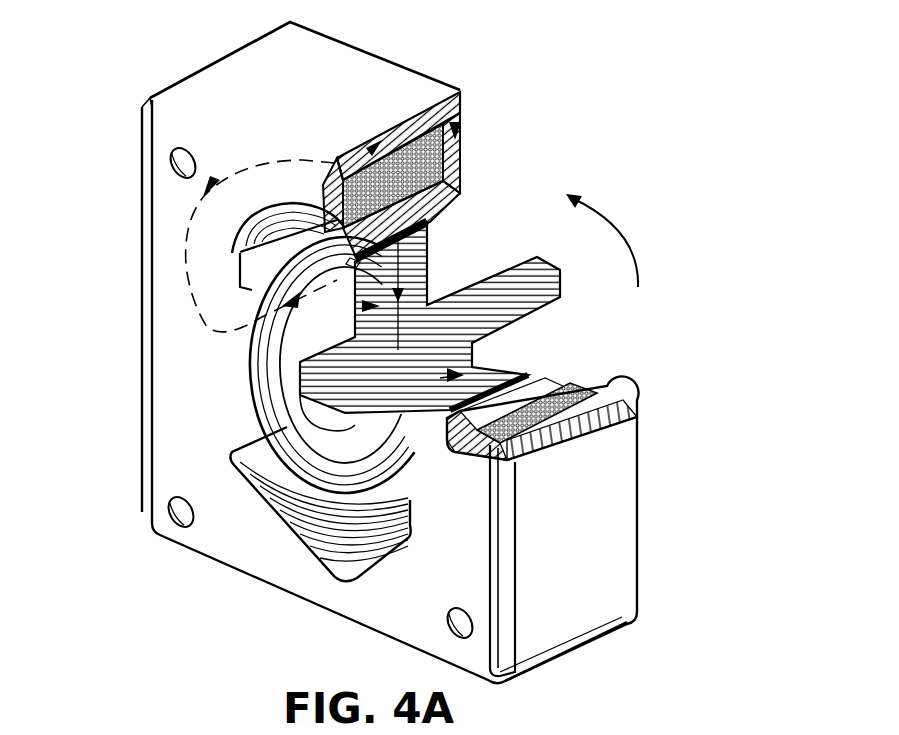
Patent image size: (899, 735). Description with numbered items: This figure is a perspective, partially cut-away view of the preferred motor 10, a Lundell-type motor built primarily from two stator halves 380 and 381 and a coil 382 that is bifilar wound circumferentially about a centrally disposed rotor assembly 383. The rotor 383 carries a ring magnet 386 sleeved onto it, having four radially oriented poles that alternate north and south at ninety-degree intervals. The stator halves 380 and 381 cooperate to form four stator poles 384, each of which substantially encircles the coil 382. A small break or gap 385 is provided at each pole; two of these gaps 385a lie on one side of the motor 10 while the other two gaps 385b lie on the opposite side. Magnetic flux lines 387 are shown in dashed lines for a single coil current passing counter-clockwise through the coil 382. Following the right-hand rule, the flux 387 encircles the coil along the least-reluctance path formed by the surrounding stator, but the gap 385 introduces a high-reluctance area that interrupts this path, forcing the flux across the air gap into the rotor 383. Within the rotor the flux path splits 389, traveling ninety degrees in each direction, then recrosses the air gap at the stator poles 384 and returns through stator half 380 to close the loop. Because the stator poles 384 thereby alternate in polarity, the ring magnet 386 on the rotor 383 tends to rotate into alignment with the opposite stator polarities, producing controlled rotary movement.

The motor 10 is at (452, 64).
The stator half 380 is at (278, 93).
The stator half 381 is at (588, 527).
The coil 382 is at (440, 157).
The rotor assembly 383 is at (482, 282).
The stator poles 384 is at (248, 397).
The gap 385 is at (418, 222).
The gaps 385a is at (355, 262).
The gaps 385b is at (540, 376).
The ring magnet 386 is at (430, 228).
The magnetic flux lines 387 is at (303, 160).
The flux path split 389 is at (312, 335).